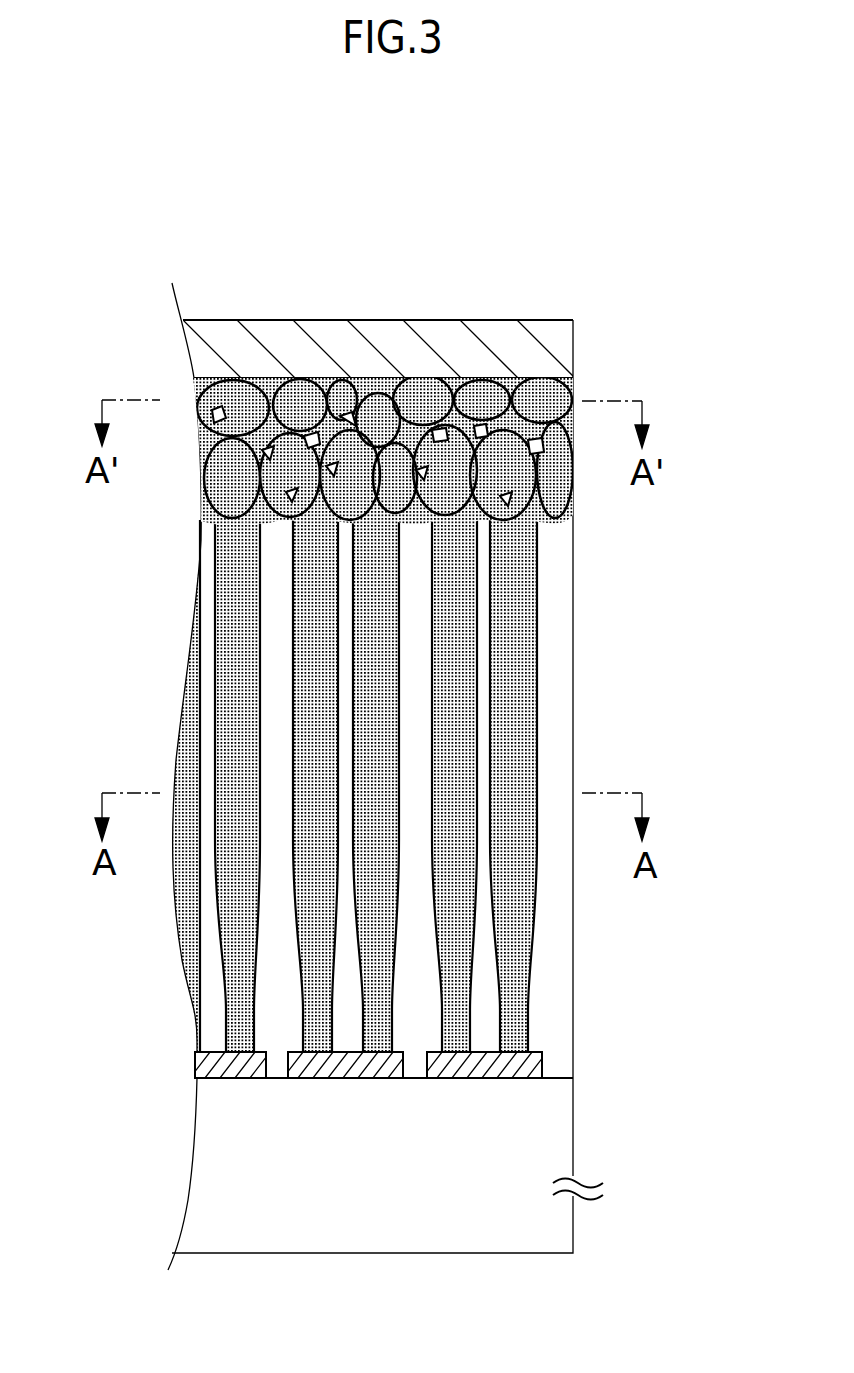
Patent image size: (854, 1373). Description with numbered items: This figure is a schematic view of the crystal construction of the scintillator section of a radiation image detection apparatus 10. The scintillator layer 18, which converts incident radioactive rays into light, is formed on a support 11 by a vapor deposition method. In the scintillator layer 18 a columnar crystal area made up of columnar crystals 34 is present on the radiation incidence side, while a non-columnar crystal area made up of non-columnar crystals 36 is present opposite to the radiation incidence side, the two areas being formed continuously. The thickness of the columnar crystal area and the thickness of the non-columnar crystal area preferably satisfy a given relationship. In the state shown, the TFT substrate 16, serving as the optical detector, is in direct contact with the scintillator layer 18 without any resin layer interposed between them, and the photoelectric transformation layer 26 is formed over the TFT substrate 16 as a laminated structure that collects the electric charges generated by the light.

The light emitting device 10 is at (350, 268).
The support 11 is at (493, 340).
The non-columnar crystals 36 is at (418, 378).
The columnar crystals 34 is at (513, 668).
The scintillator layer 18 is at (670, 377).
The photoelectric transformation layer 26 is at (195, 1063).
The TFT substrate 16 is at (670, 1048).